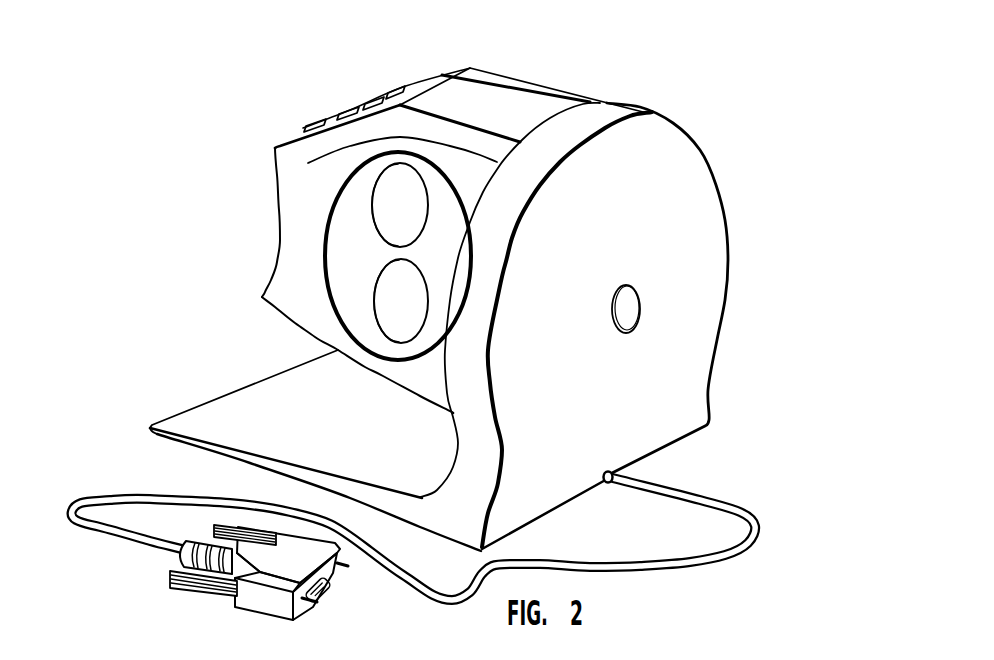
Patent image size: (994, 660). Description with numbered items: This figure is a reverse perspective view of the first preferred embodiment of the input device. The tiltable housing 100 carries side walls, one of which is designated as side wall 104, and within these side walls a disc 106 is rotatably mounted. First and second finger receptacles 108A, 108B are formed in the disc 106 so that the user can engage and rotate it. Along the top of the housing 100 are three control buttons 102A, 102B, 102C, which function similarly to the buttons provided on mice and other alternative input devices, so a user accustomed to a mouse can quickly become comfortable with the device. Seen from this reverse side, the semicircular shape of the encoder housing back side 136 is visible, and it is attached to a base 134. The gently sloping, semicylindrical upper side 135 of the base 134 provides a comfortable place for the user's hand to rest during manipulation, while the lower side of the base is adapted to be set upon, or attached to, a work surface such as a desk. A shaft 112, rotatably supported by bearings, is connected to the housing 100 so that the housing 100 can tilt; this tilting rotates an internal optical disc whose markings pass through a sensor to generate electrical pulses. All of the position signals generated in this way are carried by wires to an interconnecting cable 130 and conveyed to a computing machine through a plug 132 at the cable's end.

The tiltable housing 100 is at (540, 73).
The control button 102A is at (367, 93).
The control button 102B is at (337, 108).
The control button 102C is at (308, 122).
The side wall 104 is at (293, 294).
The disc 106 is at (371, 256).
The first finger receptacle 108A is at (419, 212).
The second finger receptacle 108B is at (421, 307).
The shaft 112 is at (623, 308).
The interconnecting cable 130 is at (723, 503).
The plug 132 is at (262, 594).
The base 134 is at (363, 497).
The upper side of the base 135 is at (365, 436).
The encoder housing back side 136 is at (681, 197).